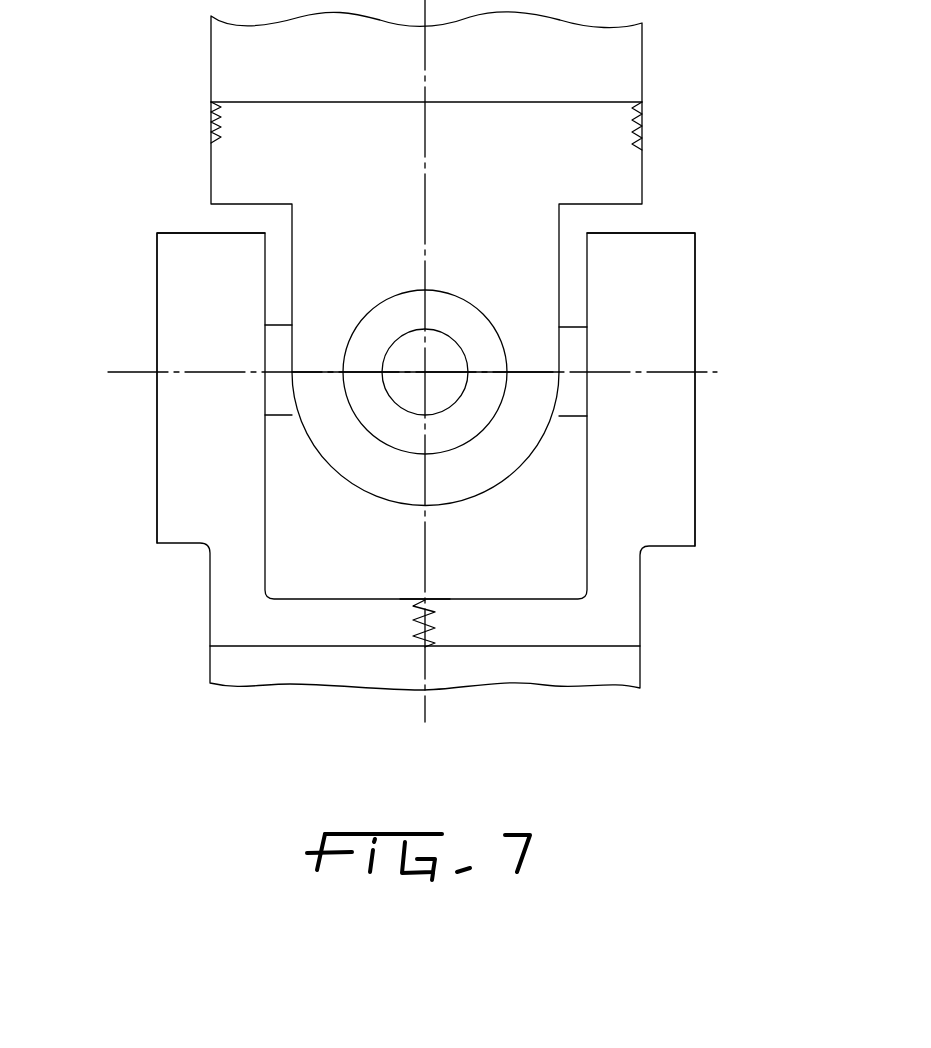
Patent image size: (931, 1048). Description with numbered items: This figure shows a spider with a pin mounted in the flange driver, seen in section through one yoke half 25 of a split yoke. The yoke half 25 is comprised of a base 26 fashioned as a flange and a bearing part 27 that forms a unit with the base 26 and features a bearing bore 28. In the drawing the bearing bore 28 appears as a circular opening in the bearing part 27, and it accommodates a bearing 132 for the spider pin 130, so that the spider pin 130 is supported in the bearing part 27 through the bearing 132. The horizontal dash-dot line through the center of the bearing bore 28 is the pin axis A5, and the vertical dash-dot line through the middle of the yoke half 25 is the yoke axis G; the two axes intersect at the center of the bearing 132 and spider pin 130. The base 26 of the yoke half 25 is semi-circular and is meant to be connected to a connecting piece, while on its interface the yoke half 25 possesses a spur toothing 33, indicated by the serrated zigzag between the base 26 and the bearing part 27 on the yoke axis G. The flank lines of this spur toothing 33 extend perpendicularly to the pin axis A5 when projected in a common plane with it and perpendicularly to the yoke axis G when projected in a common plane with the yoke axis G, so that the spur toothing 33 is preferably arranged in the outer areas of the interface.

The yoke half 25 is at (425, 380).
The base 26 is at (628, 175).
The bearing part 27 is at (548, 228).
The bearing bore 28 is at (376, 425).
The spur toothing 33 is at (420, 646).
The spider pin 130 is at (455, 303).
The bearing 132 is at (403, 353).
The yoke axis G is at (425, 572).
The pin axis A5 is at (127, 370).